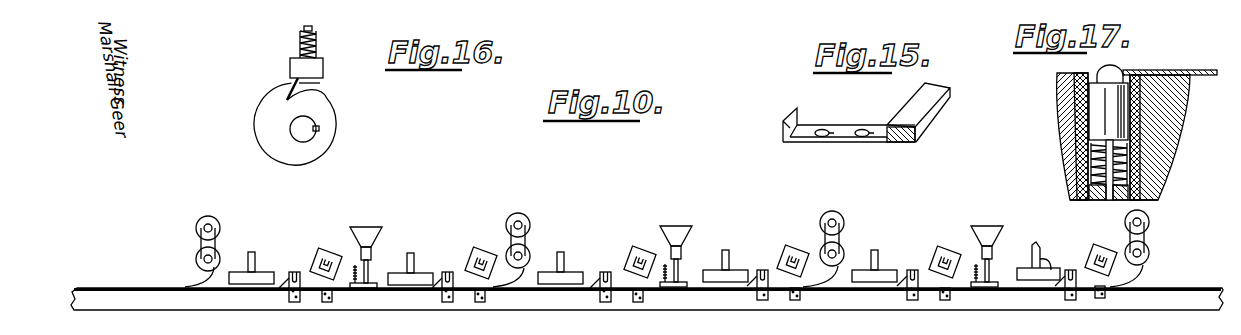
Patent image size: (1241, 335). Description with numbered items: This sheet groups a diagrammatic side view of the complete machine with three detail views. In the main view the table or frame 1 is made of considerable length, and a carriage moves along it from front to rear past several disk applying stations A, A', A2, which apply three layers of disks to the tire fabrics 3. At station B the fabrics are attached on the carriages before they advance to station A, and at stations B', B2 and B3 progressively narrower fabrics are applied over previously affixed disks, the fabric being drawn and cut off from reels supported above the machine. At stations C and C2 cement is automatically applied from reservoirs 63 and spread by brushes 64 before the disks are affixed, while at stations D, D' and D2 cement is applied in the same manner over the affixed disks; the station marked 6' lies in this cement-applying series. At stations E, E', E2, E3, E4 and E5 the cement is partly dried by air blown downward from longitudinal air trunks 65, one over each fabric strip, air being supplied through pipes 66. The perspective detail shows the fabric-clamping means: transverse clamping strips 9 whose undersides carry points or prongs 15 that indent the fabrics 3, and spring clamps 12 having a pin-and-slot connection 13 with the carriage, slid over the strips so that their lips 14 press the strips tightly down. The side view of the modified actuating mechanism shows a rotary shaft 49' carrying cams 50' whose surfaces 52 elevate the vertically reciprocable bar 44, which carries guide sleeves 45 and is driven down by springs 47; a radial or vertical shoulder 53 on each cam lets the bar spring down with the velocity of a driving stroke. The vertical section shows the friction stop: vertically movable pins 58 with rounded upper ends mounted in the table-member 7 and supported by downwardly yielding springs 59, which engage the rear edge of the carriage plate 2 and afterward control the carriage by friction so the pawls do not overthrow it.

In FIG. 16, the guide sleeves 45 is at (304, 31).
In FIG. 16, the springs 47 is at (318, 40).
In FIG. 16, the vertically reciprocable bar 44 is at (323, 67).
In FIG. 16, the cam surfaces 52 is at (273, 82).
In FIG. 16, the radial or vertical shoulder 53 is at (299, 90).
In FIG. 16, the cams 50' is at (266, 124).
In FIG. 16, the rotary shaft 49' is at (263, 138).
In FIG. 15, the spring clamps 12 is at (910, 112).
In FIG. 15, the pin-and-slot connection 13 is at (860, 130).
In FIG. 15, the lips 14 is at (916, 124).
In FIG. 15, the transverse clamping strips 9 is at (895, 142).
In FIG. 15, the points or prongs 15 is at (905, 142).
In FIG. 17, the table-member 7 is at (1160, 82).
In FIG. 17, the plate 2 is at (1198, 70).
In FIG. 17, the vertically movable pins 58 is at (1097, 125).
In FIG. 17, the springs 59 is at (1120, 152).
In FIG. 10, the table or frame 1 is at (647, 311).
In FIG. 10, the tire fabrics 3 is at (141, 271).
In FIG. 10, the station B³ B3 is at (222, 227).
In FIG. 10, the station B² B2 is at (531, 225).
In FIG. 10, the station B' is at (846, 225).
In FIG. 10, the station B is at (1134, 237).
In FIG. 10, the station E⁵ E5 is at (255, 260).
In FIG. 10, the station E⁴ E4 is at (410, 254).
In FIG. 10, the station E³ E3 is at (565, 258).
In FIG. 10, the station E² E2 is at (725, 251).
In FIG. 10, the station E' is at (874, 252).
In FIG. 10, the station E is at (1042, 278).
In FIG. 10, the longitudinal air trunks 65 is at (1030, 273).
In FIG. 10, the pipes 66 is at (1047, 272).
In FIG. 10, the brushes 64 is at (899, 282).
In FIG. 10, the reservoirs 63 is at (937, 247).
In FIG. 10, the station D² D2 is at (325, 261).
In FIG. 10, the station C² C2 is at (481, 259).
In FIG. 10, the station D' is at (639, 258).
In FIG. 10, the die 6' is at (793, 258).
In FIG. 10, the station D is at (941, 254).
In FIG. 10, the station C is at (1093, 259).
In FIG. 10, the disk applying station A is at (366, 245).
In FIG. 10, the disk applying station A' is at (676, 240).
In FIG. 10, the disk applying station A² A2 is at (989, 243).